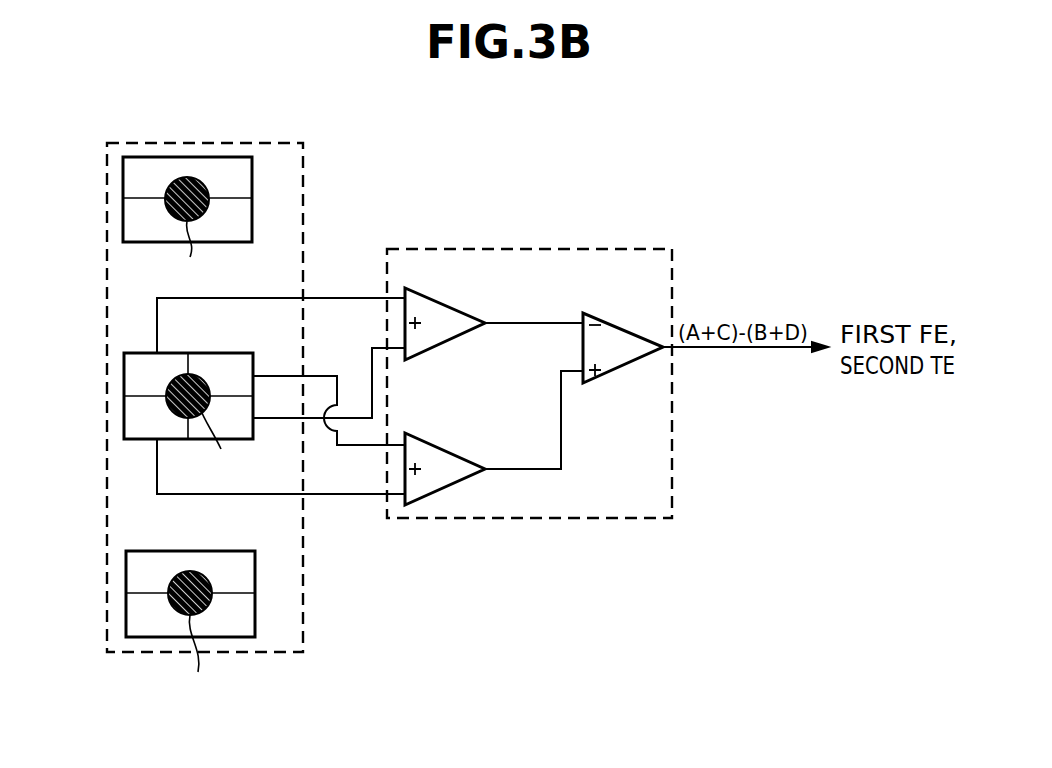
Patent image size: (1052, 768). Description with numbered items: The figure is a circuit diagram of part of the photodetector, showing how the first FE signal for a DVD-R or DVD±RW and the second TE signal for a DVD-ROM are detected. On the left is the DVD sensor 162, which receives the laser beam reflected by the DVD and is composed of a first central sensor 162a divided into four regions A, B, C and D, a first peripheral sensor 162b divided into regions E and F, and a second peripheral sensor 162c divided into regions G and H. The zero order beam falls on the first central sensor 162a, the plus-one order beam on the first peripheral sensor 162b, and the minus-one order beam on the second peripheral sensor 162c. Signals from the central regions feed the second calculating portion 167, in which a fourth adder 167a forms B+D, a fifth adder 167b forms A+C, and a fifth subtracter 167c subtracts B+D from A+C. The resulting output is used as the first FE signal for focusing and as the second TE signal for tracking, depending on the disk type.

The DVD sensor 162 is at (183, 143).
The first central sensor 162a is at (124, 396).
The first peripheral sensor 162b is at (126, 593).
The second peripheral sensor 162c is at (123, 198).
The second calculating portion 167 is at (527, 249).
The fourth adder 167a is at (445, 302).
The fifth adder 167b is at (445, 448).
The fifth subtracter 167c is at (620, 366).